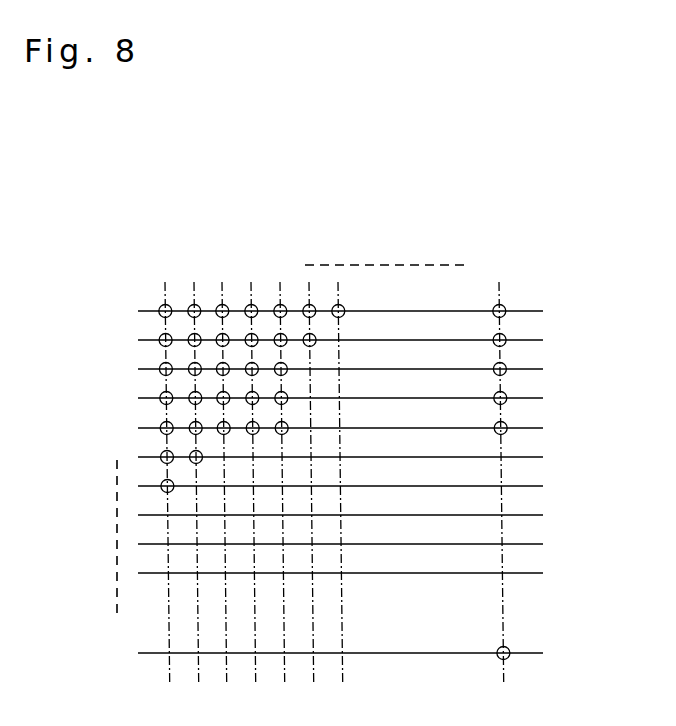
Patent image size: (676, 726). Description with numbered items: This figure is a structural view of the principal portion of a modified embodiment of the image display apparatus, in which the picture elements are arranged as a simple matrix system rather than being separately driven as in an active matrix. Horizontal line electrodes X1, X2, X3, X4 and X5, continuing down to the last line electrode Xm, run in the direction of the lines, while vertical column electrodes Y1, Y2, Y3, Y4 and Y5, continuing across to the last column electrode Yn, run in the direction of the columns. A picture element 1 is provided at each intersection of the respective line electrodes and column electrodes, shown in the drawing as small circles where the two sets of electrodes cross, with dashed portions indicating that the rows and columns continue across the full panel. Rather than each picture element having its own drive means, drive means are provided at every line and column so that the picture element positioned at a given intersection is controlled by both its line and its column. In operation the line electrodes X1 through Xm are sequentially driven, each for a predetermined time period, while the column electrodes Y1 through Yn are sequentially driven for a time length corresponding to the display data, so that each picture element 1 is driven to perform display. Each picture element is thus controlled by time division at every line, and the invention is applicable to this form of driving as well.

The picture element 1 is at (160, 306).
The line electrode X1 is at (322, 313).
The line electrode X2 is at (322, 342).
The line electrode X3 is at (322, 371).
The line electrode X4 is at (322, 400).
The line electrode X5 is at (322, 430).
The line electrode Xm is at (323, 655).
The column electrode Y1 is at (160, 470).
The column electrode Y2 is at (189, 470).
The column electrode Y3 is at (218, 470).
The column electrode Y4 is at (247, 470).
The column electrode Y5 is at (276, 470).
The column electrode Yn is at (497, 470).